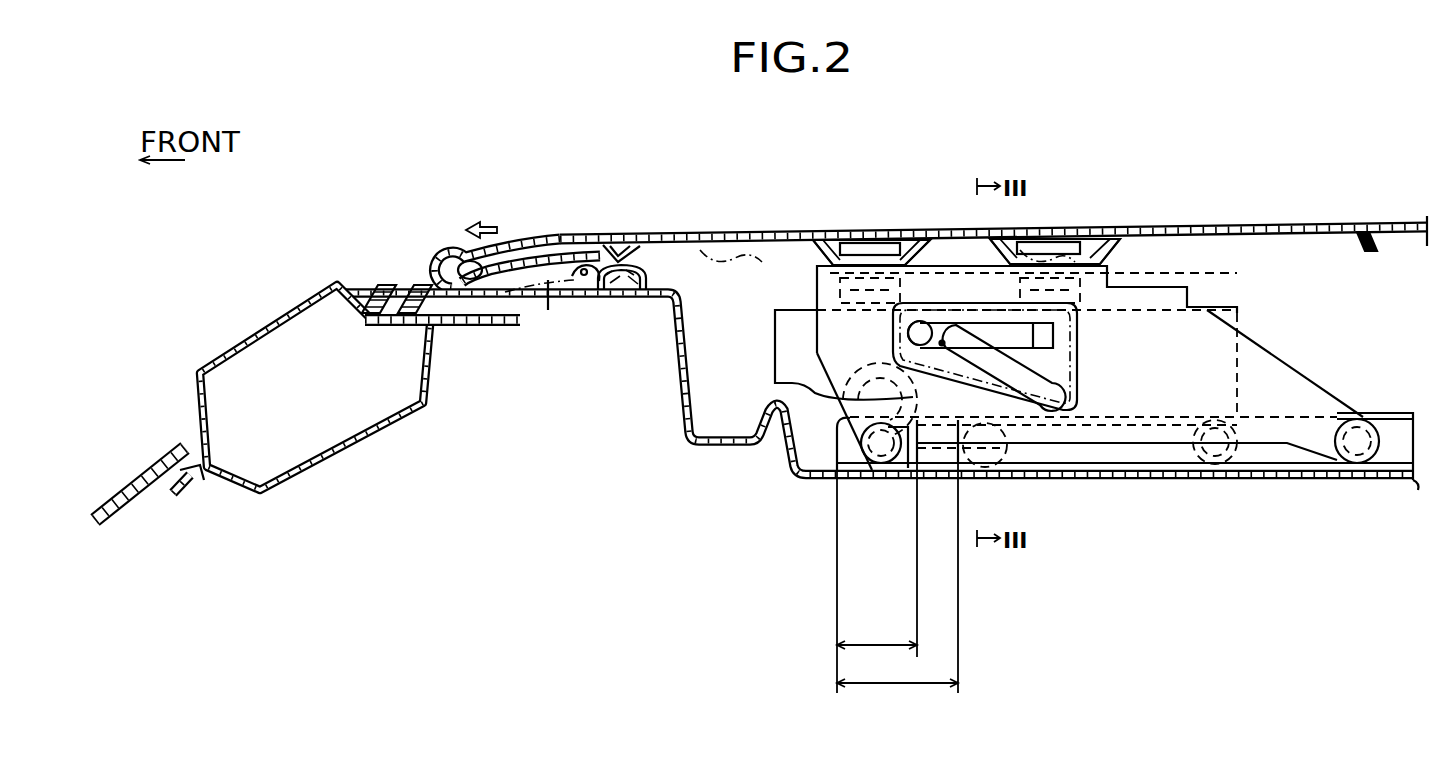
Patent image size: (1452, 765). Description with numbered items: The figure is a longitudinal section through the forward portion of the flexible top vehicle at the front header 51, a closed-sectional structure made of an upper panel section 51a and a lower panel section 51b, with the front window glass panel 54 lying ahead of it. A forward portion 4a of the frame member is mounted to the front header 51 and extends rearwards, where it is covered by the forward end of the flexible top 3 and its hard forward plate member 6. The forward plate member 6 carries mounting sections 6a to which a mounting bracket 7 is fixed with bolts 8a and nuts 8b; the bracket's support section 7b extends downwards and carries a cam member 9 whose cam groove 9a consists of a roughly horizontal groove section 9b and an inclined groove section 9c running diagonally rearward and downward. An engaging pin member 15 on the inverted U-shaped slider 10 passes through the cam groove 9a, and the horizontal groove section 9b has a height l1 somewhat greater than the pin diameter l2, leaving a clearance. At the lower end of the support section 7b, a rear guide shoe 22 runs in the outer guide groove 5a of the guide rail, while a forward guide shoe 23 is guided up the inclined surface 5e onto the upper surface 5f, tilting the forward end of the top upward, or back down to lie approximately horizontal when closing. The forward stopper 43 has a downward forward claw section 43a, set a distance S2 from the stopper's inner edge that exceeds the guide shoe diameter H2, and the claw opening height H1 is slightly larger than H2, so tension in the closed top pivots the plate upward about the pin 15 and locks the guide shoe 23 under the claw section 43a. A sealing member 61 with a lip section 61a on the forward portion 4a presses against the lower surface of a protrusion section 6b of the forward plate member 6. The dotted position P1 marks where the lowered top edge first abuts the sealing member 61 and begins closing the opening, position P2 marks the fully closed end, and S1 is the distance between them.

The flexible top 3 is at (1315, 224).
The forward portion of the frame member 4a is at (687, 286).
The outer guide groove 5a is at (1418, 455).
The inclined surface 5e is at (960, 445).
The upper surface 5f is at (1395, 414).
The forward plate member 6 is at (1197, 225).
The mounting section 6a is at (827, 262).
The protrusion section 6b is at (617, 250).
The mounting bracket 7 is at (1263, 343).
The support section 7b is at (1297, 360).
The bolt 8a is at (853, 266).
The nut 8b is at (838, 285).
The cam member 9 is at (1078, 350).
The cam groove 9a is at (942, 346).
The horizontal groove section 9b is at (893, 340).
The inclined groove section 9c is at (1078, 396).
The slider 10 is at (775, 352).
The engaging pin member 15 is at (922, 322).
The guide shoe 22 is at (1350, 420).
The guide shoe 23 is at (780, 463).
The forward stopper 43 is at (813, 485).
The forward claw section 43a is at (843, 400).
The front header 51 is at (380, 440).
The upper panel section 51a is at (290, 306).
The lower panel section 51b is at (426, 412).
The front window glass panel 54 is at (150, 495).
The sealing member 61 is at (630, 292).
The lip section 61a is at (583, 275).
The height of the opening of the forward claw section H1 is at (930, 480).
The diametrical dimension of the guide shoe H2 is at (897, 477).
The distance between start point and end point S1 is at (897, 556).
The distance of the claw section from the stopper inner edge S2 is at (877, 632).
The height dimension of the horizontal groove section l1 is at (1097, 330).
The diametrical dimension of the engaging pin member l2 is at (1080, 367).
The start point P1 is at (565, 278).
The end point P2 is at (440, 258).